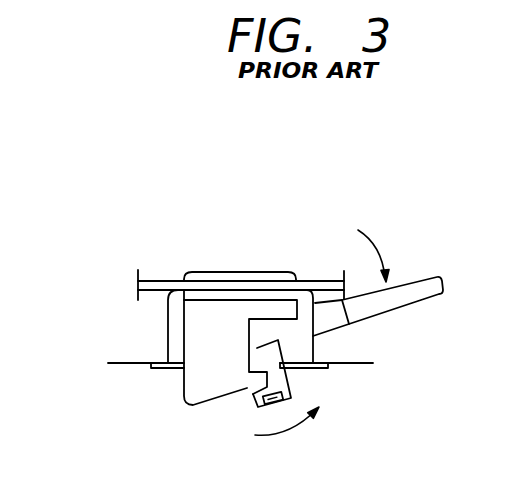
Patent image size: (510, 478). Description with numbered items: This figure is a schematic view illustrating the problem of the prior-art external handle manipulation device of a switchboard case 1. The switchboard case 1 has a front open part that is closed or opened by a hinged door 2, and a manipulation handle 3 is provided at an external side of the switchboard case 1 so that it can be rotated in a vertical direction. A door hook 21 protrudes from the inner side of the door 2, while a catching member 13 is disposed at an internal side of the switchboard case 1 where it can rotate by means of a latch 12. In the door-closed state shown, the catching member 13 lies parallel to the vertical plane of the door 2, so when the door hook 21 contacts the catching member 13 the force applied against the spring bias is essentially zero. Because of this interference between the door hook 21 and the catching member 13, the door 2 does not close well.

The switchboard case 1 is at (130, 364).
The door 2 is at (243, 285).
The door hook 21 is at (182, 388).
The manipulation handle 3 is at (418, 303).
The latch 12 is at (292, 385).
The catching member 13 is at (252, 392).